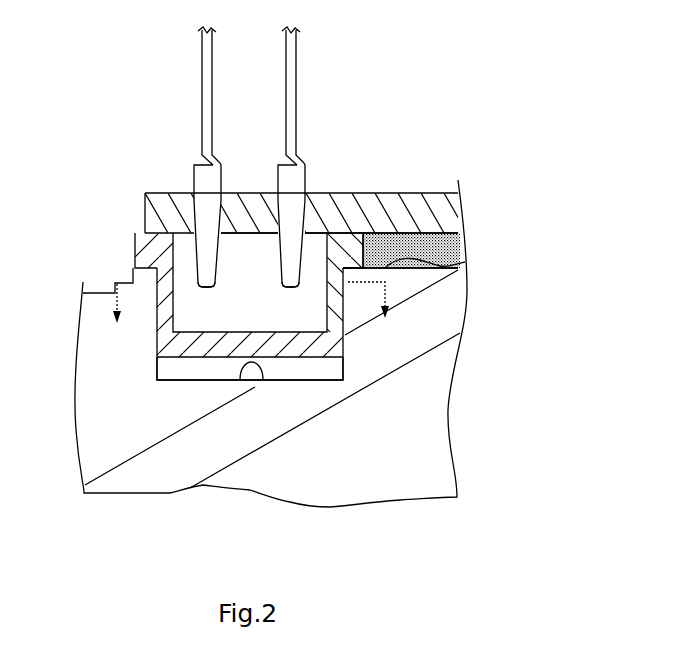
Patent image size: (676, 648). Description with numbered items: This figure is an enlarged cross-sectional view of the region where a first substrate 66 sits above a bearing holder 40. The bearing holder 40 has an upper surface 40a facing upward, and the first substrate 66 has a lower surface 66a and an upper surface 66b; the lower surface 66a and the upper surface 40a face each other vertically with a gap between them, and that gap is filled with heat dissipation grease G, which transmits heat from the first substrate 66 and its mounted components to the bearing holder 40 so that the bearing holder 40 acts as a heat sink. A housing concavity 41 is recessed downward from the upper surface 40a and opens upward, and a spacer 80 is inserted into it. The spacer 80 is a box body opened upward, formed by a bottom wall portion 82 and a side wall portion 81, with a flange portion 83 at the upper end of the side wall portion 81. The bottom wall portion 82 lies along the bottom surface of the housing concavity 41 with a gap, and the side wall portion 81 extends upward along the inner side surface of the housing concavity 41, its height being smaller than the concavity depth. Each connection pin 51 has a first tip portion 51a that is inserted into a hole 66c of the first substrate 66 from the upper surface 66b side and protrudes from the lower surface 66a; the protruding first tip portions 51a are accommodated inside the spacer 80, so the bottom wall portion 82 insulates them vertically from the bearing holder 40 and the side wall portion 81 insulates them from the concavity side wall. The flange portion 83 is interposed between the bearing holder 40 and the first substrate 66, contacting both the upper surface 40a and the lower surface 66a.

The bearing holder 40 is at (432, 385).
The upper surface 40a is at (462, 283).
The housing concavity 41 is at (262, 372).
The connection pin 51 is at (213, 90).
The first tip portion 51a is at (212, 196).
The first substrate 66 is at (420, 193).
The lower surface 66a is at (420, 240).
The upper surface 66b is at (433, 229).
The hole 66c is at (213, 272).
The heat dissipation grease G is at (465, 262).
The spacer 80 is at (205, 362).
The side wall portion 81 is at (153, 304).
The bottom wall portion 82 is at (204, 346).
The flange portion 83 is at (137, 245).